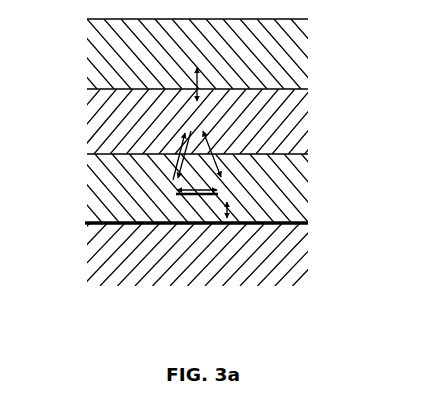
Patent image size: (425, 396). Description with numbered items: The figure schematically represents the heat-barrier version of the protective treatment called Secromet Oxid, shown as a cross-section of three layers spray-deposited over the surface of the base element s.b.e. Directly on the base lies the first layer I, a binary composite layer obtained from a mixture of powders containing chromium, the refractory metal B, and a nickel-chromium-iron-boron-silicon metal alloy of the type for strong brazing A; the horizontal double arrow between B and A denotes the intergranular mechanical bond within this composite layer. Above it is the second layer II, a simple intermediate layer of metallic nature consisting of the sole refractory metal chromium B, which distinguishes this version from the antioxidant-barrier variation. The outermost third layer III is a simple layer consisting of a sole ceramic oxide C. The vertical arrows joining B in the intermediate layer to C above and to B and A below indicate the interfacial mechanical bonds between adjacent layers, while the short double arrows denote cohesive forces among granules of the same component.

The third layer III is at (323, 20).
The second layer II is at (323, 91).
The first layer I is at (323, 161).
The surface of the base element s.b.e. is at (86, 224).
The metal alloy of the type for strong brazing A is at (227, 200).
The refractory metal B is at (190, 156).
The simple or composite ceramic oxide C is at (196, 72).